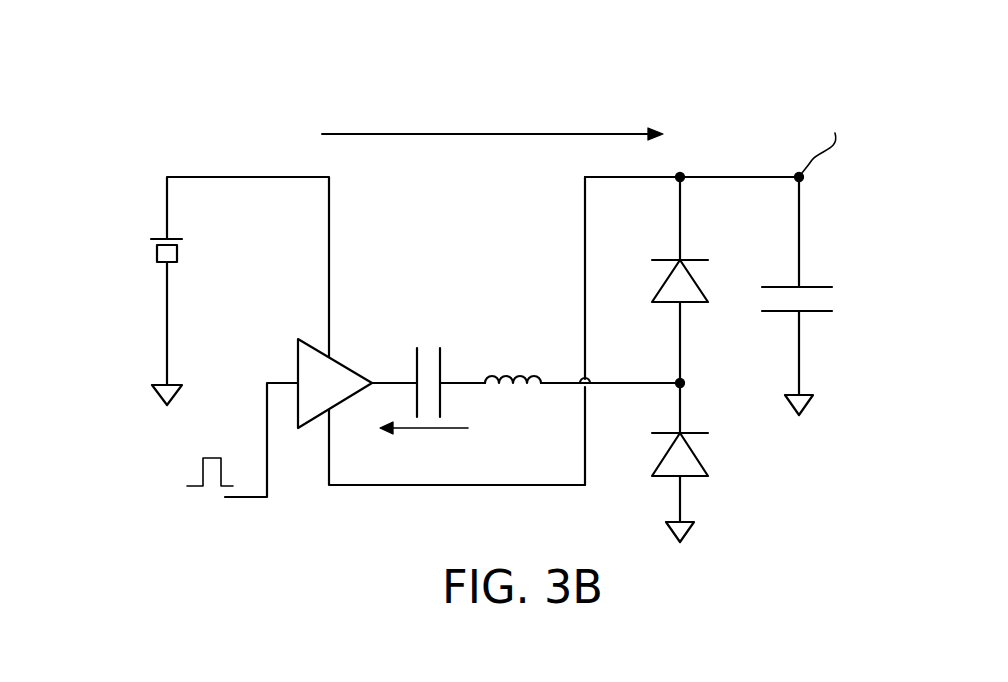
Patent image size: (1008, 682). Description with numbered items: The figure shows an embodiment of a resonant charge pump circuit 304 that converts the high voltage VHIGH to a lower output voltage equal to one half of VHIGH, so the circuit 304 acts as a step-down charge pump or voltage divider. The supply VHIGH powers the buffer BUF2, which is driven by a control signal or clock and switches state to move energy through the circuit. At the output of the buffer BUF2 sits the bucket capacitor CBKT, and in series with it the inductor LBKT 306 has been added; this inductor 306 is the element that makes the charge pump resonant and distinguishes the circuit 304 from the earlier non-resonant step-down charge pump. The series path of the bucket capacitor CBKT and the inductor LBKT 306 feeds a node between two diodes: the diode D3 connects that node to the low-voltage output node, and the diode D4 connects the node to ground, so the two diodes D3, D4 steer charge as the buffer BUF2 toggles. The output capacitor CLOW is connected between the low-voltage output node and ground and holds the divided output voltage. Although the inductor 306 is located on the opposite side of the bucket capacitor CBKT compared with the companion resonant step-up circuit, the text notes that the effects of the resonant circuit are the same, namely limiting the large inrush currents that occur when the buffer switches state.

The resonant charge pump circuit 304 is at (862, 58).
The inductor 306 is at (510, 340).
The high input voltage VHIGH is at (131, 322).
The buffer BUF2 is at (300, 383).
The bucket capacitor CBKT is at (425, 363).
The inductor LBKT is at (513, 364).
The diode D3 is at (697, 281).
The diode D4 is at (697, 454).
The output capacitor CLOW is at (831, 300).